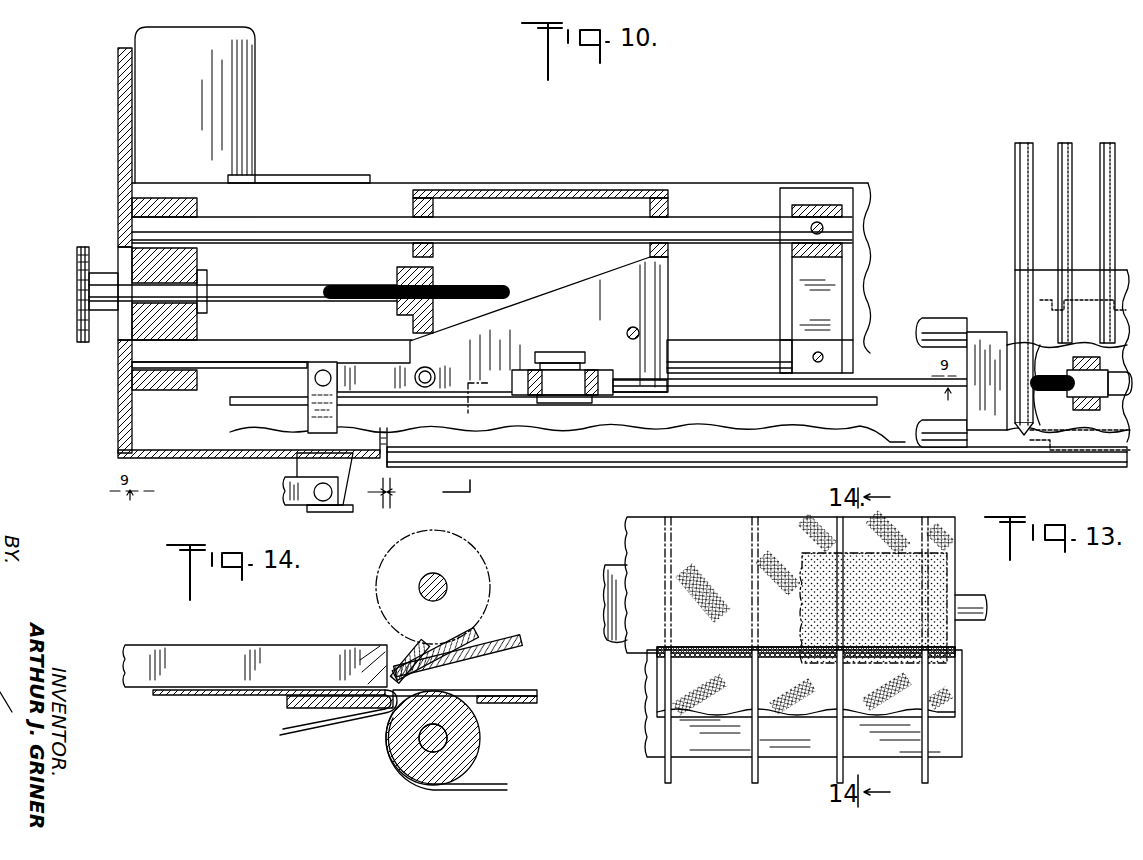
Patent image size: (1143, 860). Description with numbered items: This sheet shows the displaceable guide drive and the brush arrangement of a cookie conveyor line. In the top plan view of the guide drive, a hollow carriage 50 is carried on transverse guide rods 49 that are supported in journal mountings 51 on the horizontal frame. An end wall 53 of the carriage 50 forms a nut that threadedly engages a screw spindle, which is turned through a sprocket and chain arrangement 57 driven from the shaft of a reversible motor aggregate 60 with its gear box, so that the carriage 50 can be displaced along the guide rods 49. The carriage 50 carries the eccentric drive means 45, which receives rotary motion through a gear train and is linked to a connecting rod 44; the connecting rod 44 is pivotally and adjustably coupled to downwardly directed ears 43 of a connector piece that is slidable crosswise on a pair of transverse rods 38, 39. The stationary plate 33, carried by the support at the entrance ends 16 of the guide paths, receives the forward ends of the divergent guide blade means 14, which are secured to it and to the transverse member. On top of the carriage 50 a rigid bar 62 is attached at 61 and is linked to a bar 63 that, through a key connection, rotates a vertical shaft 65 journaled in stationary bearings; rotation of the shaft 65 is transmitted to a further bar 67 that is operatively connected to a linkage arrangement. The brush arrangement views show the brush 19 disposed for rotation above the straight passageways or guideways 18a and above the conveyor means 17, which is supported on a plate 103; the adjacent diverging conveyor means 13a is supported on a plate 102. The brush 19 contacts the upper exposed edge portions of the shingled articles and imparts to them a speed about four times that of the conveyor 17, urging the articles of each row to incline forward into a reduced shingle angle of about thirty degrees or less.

In FIG. 10, the reversible motor aggregate 60 is at (243, 93).
In FIG. 10, the transverse guide rods 49 is at (305, 220).
In FIG. 10, the sprocket and chain arrangement 57 is at (82, 247).
In FIG. 10, the journal mountings 51 is at (202, 336).
In FIG. 10, the end wall 53 is at (397, 270).
In FIG. 10, the rigid bar 62 is at (365, 363).
In FIG. 10, the attachment point 61 is at (432, 370).
In FIG. 10, the bar 63 is at (308, 385).
In FIG. 10, the carriage 50 is at (652, 301).
In FIG. 10, the eccentric drive means 45 is at (604, 358).
In FIG. 10, the connecting rod 44 is at (885, 393).
In FIG. 10, the transverse rod 39 is at (931, 317).
In FIG. 10, the transverse rod 38 is at (935, 420).
In FIG. 10, the stationary plate 33 is at (986, 331).
In FIG. 10, the entrance ends 16 is at (1042, 274).
In FIG. 10, the guide blade means 14 is at (1105, 162).
In FIG. 10, the ears 43 is at (1061, 411).
In FIG. 10, the bar 67 is at (282, 490).
In FIG. 10, the vertical shaft 65 is at (310, 508).
In FIG. 14, the brush 19 is at (378, 585).
In FIG. 13, the brush 19 is at (905, 555).
In FIG. 14, the guideways 18a is at (258, 644).
In FIG. 13, the guideways 18a is at (930, 740).
In FIG. 14, the conveyor means 17 is at (500, 690).
In FIG. 13, the conveyor means 17 is at (942, 685).
In FIG. 14, the diverging conveyor means 13a is at (165, 697).
In FIG. 14, the plate 102 is at (222, 700).
In FIG. 14, the plate 103 is at (505, 703).